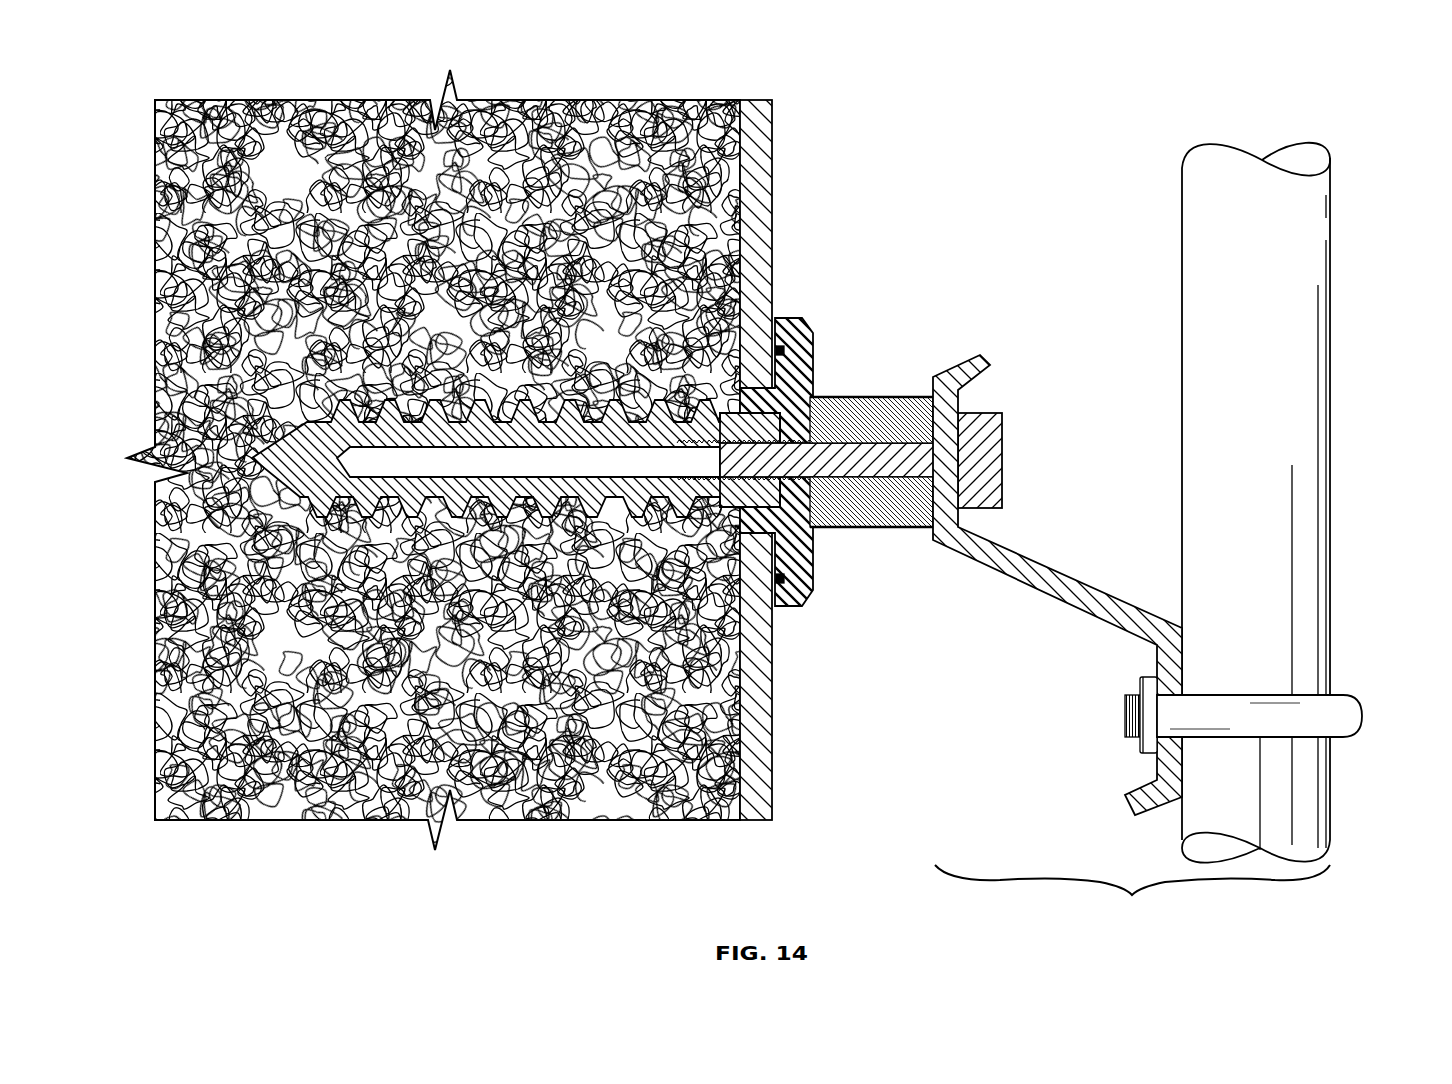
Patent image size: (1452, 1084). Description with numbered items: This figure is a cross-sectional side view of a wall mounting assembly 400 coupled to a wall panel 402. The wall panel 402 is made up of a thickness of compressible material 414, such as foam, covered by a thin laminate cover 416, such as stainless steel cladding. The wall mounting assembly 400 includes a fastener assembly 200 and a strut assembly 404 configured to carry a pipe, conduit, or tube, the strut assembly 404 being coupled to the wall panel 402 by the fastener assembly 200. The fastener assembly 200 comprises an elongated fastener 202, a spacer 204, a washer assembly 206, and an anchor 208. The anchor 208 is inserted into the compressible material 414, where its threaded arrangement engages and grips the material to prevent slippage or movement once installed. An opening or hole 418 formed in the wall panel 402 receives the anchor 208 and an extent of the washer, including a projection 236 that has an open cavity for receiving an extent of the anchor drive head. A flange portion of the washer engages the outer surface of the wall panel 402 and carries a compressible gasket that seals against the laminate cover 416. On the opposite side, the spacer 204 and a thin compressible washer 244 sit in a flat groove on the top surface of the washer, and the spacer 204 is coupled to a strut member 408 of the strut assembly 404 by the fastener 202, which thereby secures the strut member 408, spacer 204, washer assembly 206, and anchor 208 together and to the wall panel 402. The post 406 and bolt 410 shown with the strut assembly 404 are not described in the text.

The wall mounting assembly 400 is at (1186, 483).
The wall panel 402 is at (486, 450).
The thickness of compressible material 414 is at (704, 127).
The thin laminate cover 416 is at (774, 140).
The projection 236 is at (733, 398).
The fastener assembly 200 is at (663, 451).
The anchor 208 is at (660, 512).
The opening or hole 418 is at (769, 511).
The washer assembly 206 is at (810, 325).
The compressible washer 244 is at (812, 405).
The spacer 204 is at (905, 396).
The elongated fastener 202 is at (985, 413).
The post 406 is at (1332, 272).
The strut member 408 is at (1040, 560).
The bracket bolt 410 is at (1362, 716).
The strut assembly 404 is at (1132, 894).